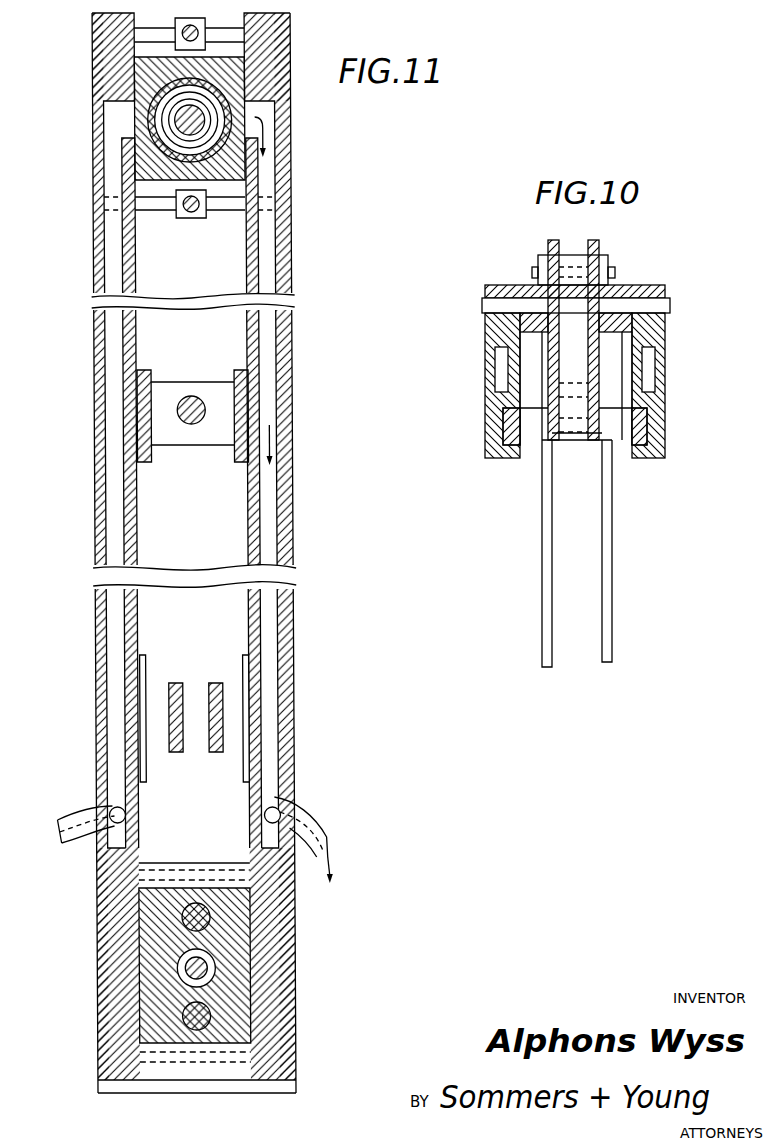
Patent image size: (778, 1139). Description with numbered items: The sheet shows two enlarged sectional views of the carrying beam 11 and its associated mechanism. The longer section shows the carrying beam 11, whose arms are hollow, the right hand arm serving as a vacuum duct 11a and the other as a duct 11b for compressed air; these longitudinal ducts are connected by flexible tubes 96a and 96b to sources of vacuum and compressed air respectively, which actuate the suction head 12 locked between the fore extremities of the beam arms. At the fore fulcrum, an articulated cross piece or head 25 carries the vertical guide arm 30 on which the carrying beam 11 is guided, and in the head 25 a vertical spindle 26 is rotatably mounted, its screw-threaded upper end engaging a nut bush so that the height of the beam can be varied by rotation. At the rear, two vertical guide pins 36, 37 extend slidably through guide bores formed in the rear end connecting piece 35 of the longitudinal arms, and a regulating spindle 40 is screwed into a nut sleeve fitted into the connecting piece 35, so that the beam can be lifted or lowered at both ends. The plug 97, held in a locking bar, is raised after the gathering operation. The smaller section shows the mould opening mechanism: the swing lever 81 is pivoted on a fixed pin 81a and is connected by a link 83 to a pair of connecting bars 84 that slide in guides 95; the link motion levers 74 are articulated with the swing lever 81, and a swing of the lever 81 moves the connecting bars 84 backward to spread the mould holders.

In FIG. 11, the carrying beam 11 is at (93, 360).
In FIG. 11, the vacuum duct 11a is at (115, 248).
In FIG. 10, the vacuum duct 11a is at (495, 370).
In FIG. 11, the compressed air duct 11b is at (267, 252).
In FIG. 10, the compressed air duct 11b is at (650, 363).
In FIG. 11, the suction head 12 is at (140, 70).
In FIG. 11, the plug 97 is at (167, 118).
In FIG. 11, the vertical guide arm 30 is at (140, 413).
In FIG. 11, the cross piece or head 25 is at (212, 443).
In FIG. 11, the vertical spindle 26 is at (188, 397).
In FIG. 11, the guides 95 is at (240, 658).
In FIG. 10, the guides 95 is at (507, 458).
In FIG. 11, the swing lever 81 is at (213, 767).
In FIG. 10, the swing lever 81 is at (593, 240).
In FIG. 10, the pin 81a is at (670, 308).
In FIG. 11, the flexible tube 96a is at (113, 828).
In FIG. 11, the flexible tube 96b is at (257, 815).
In FIG. 11, the rear end connecting piece 35 is at (150, 988).
In FIG. 11, the vertical guide pin 36 is at (193, 915).
In FIG. 11, the regulating spindle 40 is at (200, 963).
In FIG. 11, the vertical guide pin 37 is at (200, 1015).
In FIG. 10, the link 83 is at (577, 442).
In FIG. 10, the connecting bars 84 is at (553, 448).
In FIG. 10, the link motion levers 74 is at (602, 592).